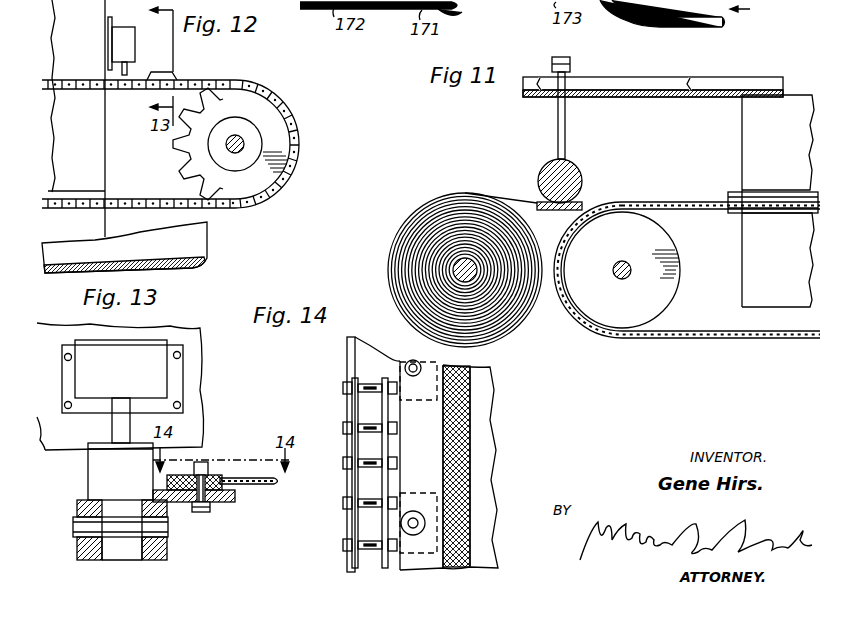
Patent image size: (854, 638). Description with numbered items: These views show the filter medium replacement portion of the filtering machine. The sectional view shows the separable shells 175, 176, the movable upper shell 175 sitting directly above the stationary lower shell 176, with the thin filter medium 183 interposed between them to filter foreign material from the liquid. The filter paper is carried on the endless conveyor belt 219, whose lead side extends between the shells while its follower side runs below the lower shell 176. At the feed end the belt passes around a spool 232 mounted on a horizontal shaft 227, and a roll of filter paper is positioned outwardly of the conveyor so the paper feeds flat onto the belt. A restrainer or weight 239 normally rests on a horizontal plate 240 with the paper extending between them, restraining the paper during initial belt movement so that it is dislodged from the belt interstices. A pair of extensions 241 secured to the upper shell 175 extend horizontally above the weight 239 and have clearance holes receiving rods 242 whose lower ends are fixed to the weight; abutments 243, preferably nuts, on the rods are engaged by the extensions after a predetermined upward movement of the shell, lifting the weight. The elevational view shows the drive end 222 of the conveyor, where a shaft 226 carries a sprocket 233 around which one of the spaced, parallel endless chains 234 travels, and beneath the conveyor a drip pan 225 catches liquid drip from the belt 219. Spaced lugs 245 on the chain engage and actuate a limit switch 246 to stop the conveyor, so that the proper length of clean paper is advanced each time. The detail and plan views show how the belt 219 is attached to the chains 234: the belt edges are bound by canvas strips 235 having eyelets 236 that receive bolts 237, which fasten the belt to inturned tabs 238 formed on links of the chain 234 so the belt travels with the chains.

In FIG. 11, the upper shell 175 is at (790, 140).
In FIG. 11, the lower shell 176 is at (793, 276).
In FIG. 11, the filter medium 183 is at (592, 203).
In FIG. 11, the conveyor belt 219 is at (703, 338).
In FIG. 13, the conveyor belt 219 is at (265, 490).
In FIG. 14, the conveyor belt 219 is at (497, 465).
In FIG. 12, the feed or drive end of the conveyor 222 is at (286, 91).
In FIG. 12, the drip pan 225 is at (211, 244).
In FIG. 12, the horizontal shaft 226 is at (232, 152).
In FIG. 11, the horizontal shaft 227 is at (627, 281).
In FIG. 11, the spool 232 is at (665, 243).
In FIG. 12, the sprocket 233 is at (280, 137).
In FIG. 12, the endless chain 234 is at (86, 90).
In FIG. 13, the endless chain 234 is at (150, 556).
In FIG. 14, the endless chain 234 is at (346, 508).
In FIG. 13, the canvas strip 235 is at (215, 475).
In FIG. 14, the canvas strip 235 is at (462, 435).
In FIG. 13, the eyelet 236 is at (206, 462).
In FIG. 13, the bolt 237 is at (200, 513).
In FIG. 13, the inturned tab 238 is at (211, 505).
In FIG. 14, the inturned tab 238 is at (401, 404).
In FIG. 11, the weight 239 is at (574, 167).
In FIG. 11, the plate 240 is at (540, 202).
In FIG. 11, the extension 241 is at (760, 77).
In FIG. 11, the rod 242 is at (557, 120).
In FIG. 11, the abutment 243 is at (571, 63).
In FIG. 12, the lug 245 is at (167, 73).
In FIG. 13, the lug 245 is at (90, 480).
In FIG. 12, the limit switch 246 is at (104, 47).
In FIG. 13, the limit switch 246 is at (140, 381).